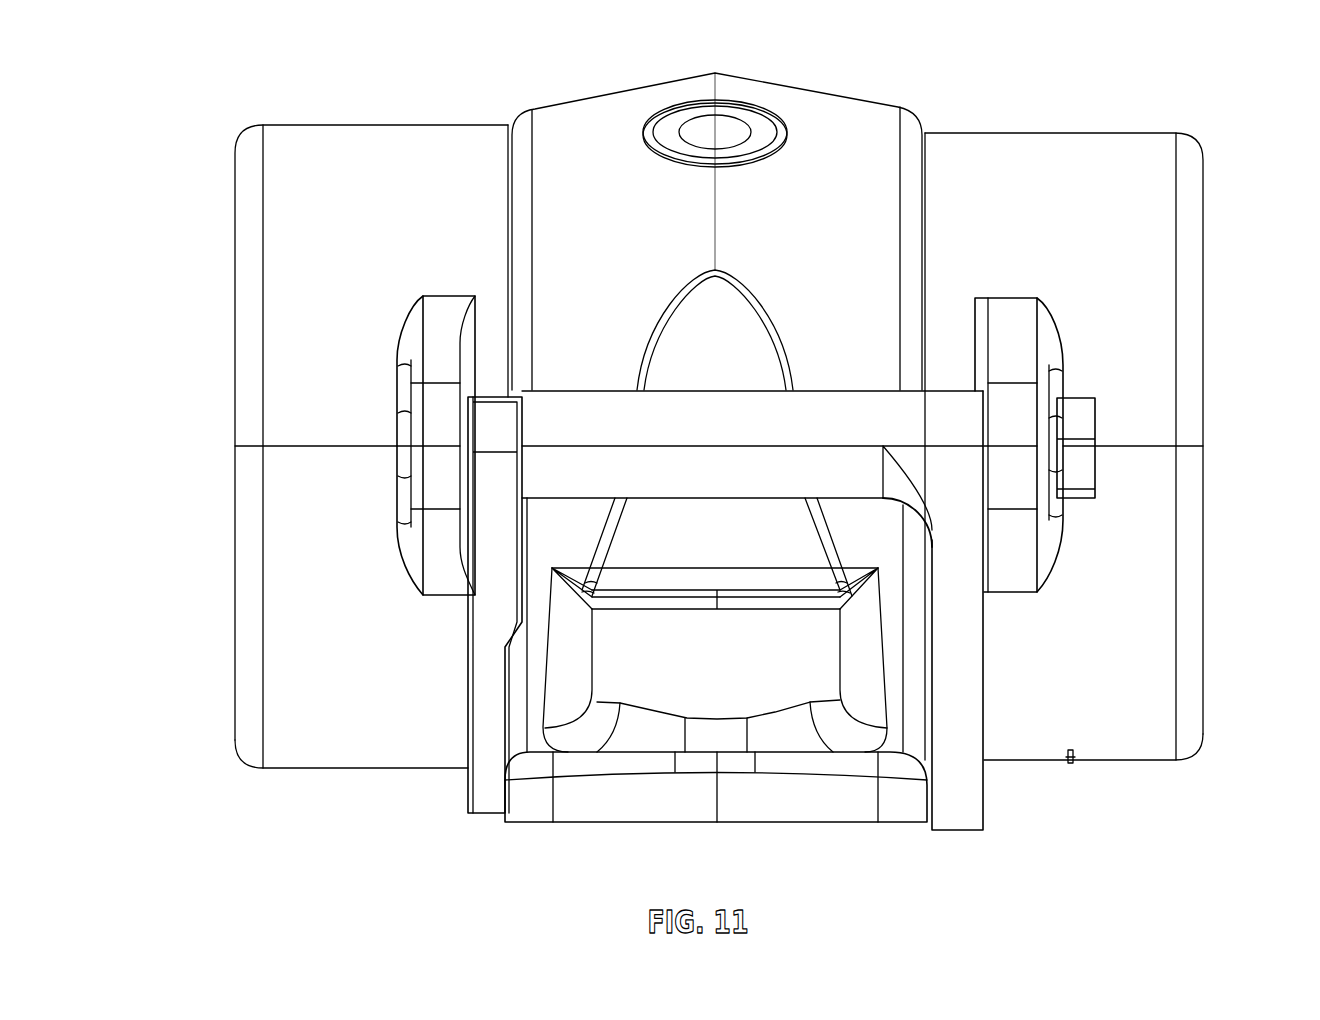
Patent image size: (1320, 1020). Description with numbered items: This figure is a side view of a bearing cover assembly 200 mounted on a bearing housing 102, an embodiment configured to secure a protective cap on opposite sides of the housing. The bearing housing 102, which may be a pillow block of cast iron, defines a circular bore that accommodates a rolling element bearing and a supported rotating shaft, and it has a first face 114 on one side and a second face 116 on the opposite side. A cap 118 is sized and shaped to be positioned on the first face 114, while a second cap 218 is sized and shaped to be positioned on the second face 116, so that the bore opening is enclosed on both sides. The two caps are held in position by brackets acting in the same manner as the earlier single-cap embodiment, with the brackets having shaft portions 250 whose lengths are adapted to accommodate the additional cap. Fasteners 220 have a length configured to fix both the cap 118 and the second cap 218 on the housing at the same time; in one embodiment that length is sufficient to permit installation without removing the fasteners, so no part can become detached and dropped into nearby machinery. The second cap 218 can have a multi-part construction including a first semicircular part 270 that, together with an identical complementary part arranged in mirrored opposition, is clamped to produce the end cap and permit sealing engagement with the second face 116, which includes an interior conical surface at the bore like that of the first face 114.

The bearing housing 102 is at (863, 135).
The first face 114 is at (510, 245).
The second face 116 is at (910, 187).
The cap 118 is at (300, 752).
The bearing cover assembly 200 is at (721, 453).
The second cap 218 is at (1074, 756).
The fastener 220 is at (398, 465).
The shaft portion 250 is at (831, 410).
The first semicircular part 270 is at (1022, 750).